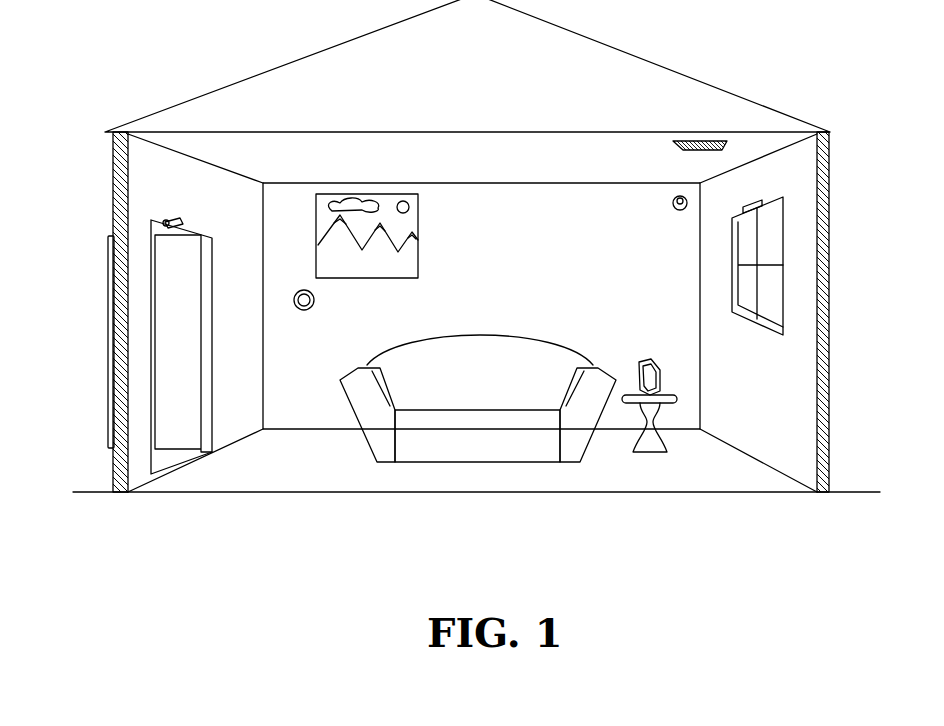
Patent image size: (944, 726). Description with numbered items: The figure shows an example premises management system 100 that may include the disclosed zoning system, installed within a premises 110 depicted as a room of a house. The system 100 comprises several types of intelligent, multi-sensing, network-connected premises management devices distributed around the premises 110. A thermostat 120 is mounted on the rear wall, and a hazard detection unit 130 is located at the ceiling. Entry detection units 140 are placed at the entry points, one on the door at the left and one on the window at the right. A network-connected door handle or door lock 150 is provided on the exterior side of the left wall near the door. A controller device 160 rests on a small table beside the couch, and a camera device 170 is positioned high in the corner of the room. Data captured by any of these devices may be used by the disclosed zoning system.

The premises management system 100 is at (498, 568).
The premises 110 is at (489, 275).
The thermostat 120 is at (294, 300).
The hazard detection unit 130 is at (681, 146).
The entry detection unit 140 is at (180, 221).
The door handle 150 is at (107, 342).
The controller device 160 is at (639, 360).
The camera device 170 is at (674, 209).